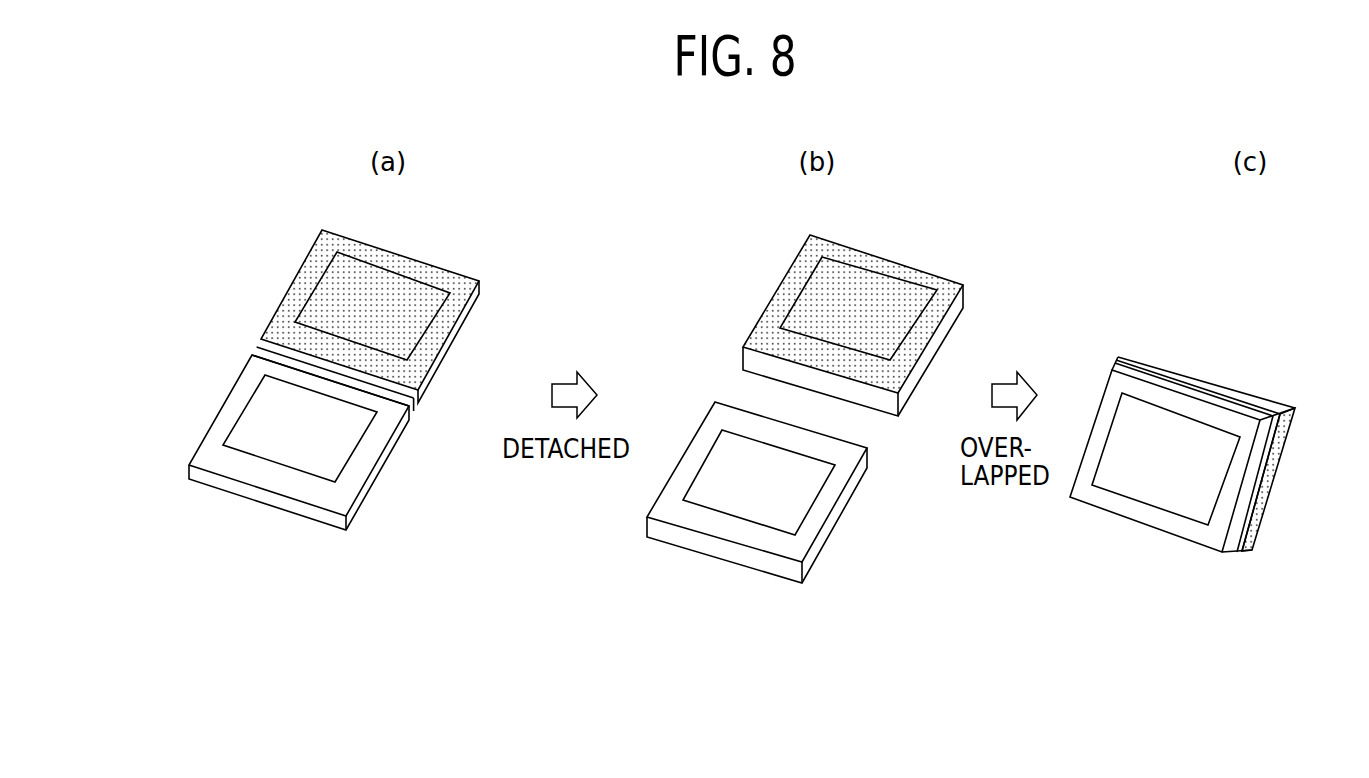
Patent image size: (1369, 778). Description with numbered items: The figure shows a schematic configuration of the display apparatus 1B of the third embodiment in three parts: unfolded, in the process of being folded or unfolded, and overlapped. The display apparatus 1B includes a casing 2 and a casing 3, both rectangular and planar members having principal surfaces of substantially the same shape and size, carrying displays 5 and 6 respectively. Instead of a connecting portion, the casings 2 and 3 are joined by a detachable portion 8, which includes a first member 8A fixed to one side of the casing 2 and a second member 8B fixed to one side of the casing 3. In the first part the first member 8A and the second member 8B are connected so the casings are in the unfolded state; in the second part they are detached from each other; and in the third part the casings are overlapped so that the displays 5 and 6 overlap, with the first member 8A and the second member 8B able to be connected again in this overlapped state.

The display apparatus 1B is at (278, 214).
The casing 2 is at (235, 407).
The casing 3 is at (310, 282).
The display 5 is at (333, 443).
The display 6 is at (400, 322).
The detachable portion 8 is at (173, 292).
The first member 8A is at (277, 357).
The second member 8B is at (283, 338).